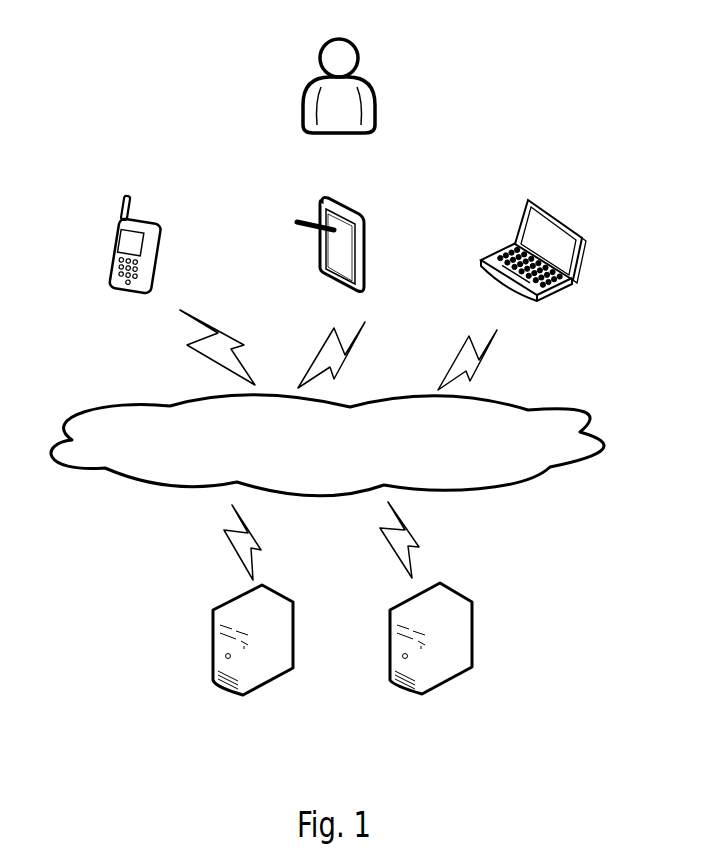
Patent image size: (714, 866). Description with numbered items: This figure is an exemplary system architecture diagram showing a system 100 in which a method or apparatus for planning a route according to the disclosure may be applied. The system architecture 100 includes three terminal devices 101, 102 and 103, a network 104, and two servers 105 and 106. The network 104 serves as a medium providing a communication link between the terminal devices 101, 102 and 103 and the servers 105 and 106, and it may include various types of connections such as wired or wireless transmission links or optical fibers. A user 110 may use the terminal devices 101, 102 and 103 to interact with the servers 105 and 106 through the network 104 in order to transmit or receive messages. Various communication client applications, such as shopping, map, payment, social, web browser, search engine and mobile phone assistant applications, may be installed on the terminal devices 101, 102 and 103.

The system architecture 100 is at (619, 44).
The terminal device 101 is at (137, 264).
The terminal device 102 is at (330, 262).
The terminal device 103 is at (533, 267).
The network 104 is at (327, 445).
The server 105 is at (253, 657).
The server 106 is at (431, 656).
The user 110 is at (339, 103).